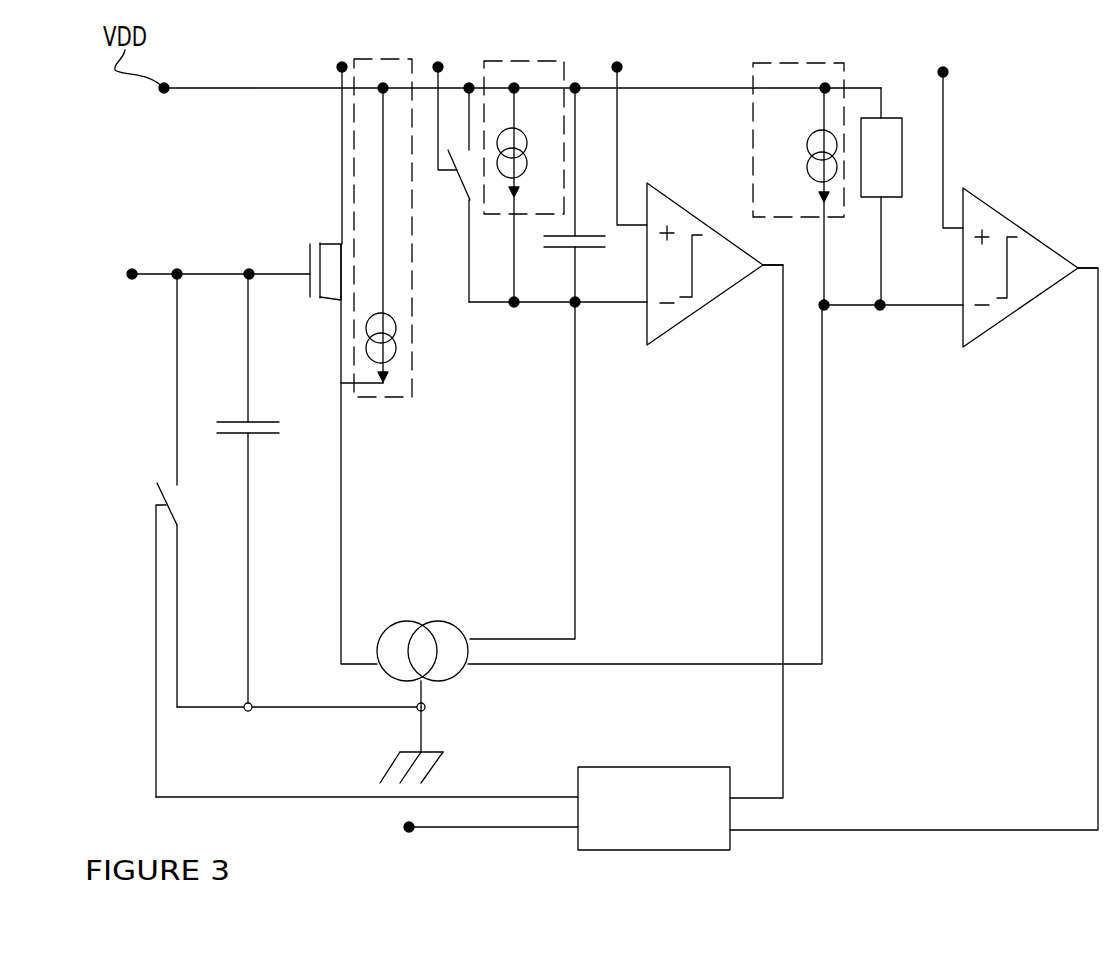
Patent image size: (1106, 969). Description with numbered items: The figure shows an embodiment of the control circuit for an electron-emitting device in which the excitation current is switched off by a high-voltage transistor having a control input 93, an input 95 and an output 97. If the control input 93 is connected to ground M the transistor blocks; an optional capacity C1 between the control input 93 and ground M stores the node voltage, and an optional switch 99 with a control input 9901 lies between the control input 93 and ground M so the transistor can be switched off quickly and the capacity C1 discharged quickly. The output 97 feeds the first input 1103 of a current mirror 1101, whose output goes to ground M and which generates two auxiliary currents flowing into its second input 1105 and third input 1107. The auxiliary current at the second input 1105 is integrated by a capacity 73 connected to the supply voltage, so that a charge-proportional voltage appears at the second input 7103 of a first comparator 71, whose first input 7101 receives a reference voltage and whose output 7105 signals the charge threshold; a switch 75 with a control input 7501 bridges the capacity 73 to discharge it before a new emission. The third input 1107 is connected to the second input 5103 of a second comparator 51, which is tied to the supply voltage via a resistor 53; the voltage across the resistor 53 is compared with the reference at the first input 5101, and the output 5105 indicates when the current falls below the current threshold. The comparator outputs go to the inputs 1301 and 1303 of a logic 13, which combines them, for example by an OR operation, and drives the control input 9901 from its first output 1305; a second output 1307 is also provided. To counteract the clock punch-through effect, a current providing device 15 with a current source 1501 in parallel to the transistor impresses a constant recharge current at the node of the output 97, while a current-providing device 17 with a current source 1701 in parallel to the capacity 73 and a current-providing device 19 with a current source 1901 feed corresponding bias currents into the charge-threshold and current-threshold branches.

The control input 93 is at (132, 274).
The input 95 is at (342, 67).
The output 97 is at (341, 322).
The switch 99 is at (156, 490).
The control input 9901 is at (156, 522).
The capacity C1 is at (268, 421).
The current providing device 15 is at (371, 58).
The current source 1501 is at (382, 310).
The current-providing device 17 is at (548, 60).
The current source 1701 is at (527, 151).
The current-providing device 19 is at (787, 63).
The current source 1901 is at (807, 150).
The switch 75 is at (462, 176).
The control input 7501 is at (438, 67).
The capacity 73 is at (563, 247).
The first comparator 71 is at (702, 222).
The first input 7101 is at (617, 67).
The second input 7103 is at (575, 302).
The output 7105 is at (783, 330).
The resistor 53 is at (893, 118).
The second comparator 51 is at (1027, 228).
The first input 5101 is at (943, 72).
The second input 5103 is at (880, 305).
The output 5105 is at (1098, 290).
The current mirror 1101 is at (426, 622).
The first input 1103 is at (341, 592).
The second input 1105 is at (575, 602).
The third input 1107 is at (704, 667).
The ground M is at (400, 752).
The logic 13 is at (672, 851).
The input 1301 is at (784, 757).
The input 1303 is at (868, 832).
The first output 1305 is at (493, 797).
The second output 1307 is at (409, 830).